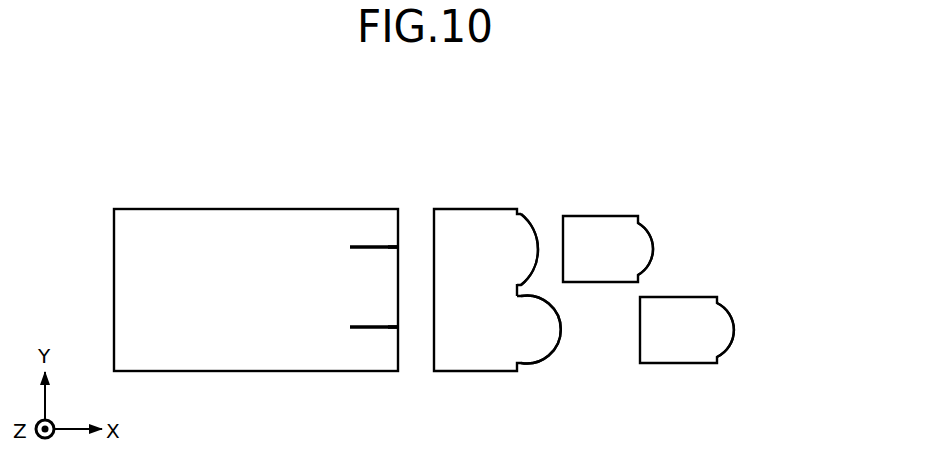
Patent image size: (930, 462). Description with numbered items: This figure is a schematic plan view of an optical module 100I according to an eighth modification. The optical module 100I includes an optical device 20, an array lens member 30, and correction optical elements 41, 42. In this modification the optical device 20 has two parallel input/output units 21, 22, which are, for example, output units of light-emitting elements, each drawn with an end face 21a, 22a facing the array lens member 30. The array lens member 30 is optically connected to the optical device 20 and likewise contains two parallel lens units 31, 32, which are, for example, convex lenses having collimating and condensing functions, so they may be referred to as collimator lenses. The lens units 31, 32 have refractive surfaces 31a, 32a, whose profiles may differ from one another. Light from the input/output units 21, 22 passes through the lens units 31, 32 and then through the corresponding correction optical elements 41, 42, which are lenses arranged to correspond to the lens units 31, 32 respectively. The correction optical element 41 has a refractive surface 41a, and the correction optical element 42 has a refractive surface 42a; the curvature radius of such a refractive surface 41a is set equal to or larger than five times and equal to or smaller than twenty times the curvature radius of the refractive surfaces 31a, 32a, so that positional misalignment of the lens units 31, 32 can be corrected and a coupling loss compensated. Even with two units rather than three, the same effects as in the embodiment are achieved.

The optical module 100I is at (684, 135).
The optical device 20 is at (179, 208).
The input/output unit 21 is at (372, 245).
The first emission end face 21a is at (403, 247).
The input/output unit 22 is at (372, 330).
The second emission end face 22a is at (403, 330).
The array lens member 30 is at (448, 208).
The lens unit 31 is at (528, 245).
The refractive surface 31a is at (538, 235).
The lens unit 32 is at (540, 328).
The refractive surface 32a is at (561, 332).
The correction optical element 41 is at (654, 236).
The refractive surface 41a is at (653, 257).
The correction optical element 42 is at (734, 318).
The second fiber end face 42a is at (735, 333).